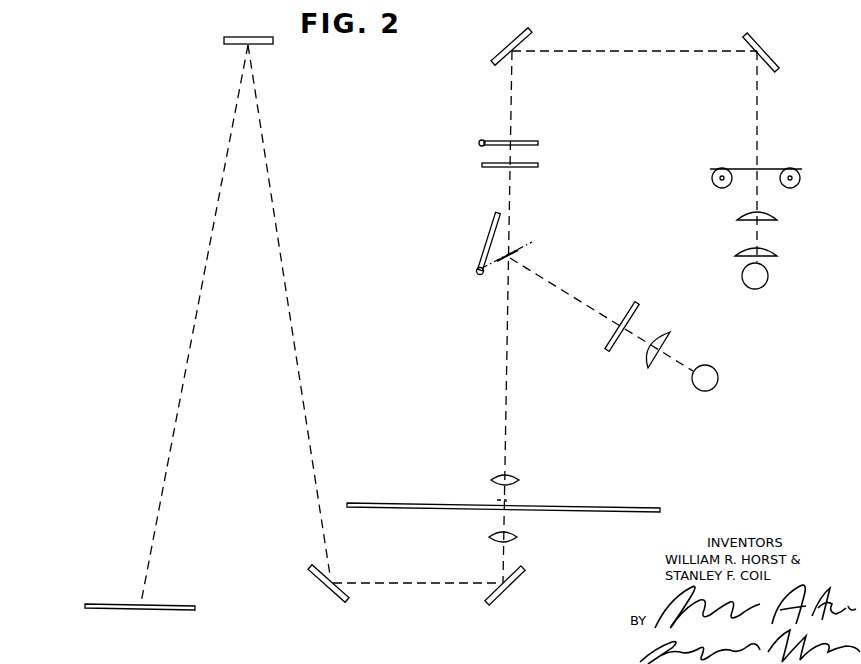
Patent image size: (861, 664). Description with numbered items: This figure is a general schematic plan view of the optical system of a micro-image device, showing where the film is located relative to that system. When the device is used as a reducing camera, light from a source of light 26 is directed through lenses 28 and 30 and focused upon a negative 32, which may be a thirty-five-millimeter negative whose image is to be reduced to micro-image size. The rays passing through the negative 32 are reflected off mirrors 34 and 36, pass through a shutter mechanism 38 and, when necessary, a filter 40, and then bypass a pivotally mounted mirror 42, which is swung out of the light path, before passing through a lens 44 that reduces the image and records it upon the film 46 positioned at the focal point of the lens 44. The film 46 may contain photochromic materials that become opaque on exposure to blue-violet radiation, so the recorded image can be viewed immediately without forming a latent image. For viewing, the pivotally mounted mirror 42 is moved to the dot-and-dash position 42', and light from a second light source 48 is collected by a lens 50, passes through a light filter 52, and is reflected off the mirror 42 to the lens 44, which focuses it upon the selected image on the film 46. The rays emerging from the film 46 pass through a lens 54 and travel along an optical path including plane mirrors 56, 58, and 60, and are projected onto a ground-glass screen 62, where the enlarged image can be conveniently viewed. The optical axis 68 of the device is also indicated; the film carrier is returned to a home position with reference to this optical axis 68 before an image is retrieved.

The source of light 26 is at (768, 277).
The lens 28 is at (773, 250).
The lens 30 is at (777, 218).
The negative 32 is at (765, 169).
The mirror 34 is at (766, 56).
The mirror 36 is at (526, 30).
The shutter mechanism 38 is at (520, 141).
The filter 40 is at (536, 165).
The pivotally mounted mirror 42 is at (466, 243).
The dot-and-dash position of pivotally mounted mirror 42' is at (527, 256).
The lens 44 is at (510, 477).
The film 46 is at (563, 507).
The second light source 48 is at (719, 380).
The lens 50 is at (667, 341).
The light filter 52 is at (628, 309).
The lens 54 is at (511, 535).
The plane mirror 56 is at (512, 585).
The plane mirror 58 is at (320, 584).
The plane mirror 60 is at (245, 37).
The ground-glass screen 62 is at (150, 610).
The optical axis 68 is at (497, 500).